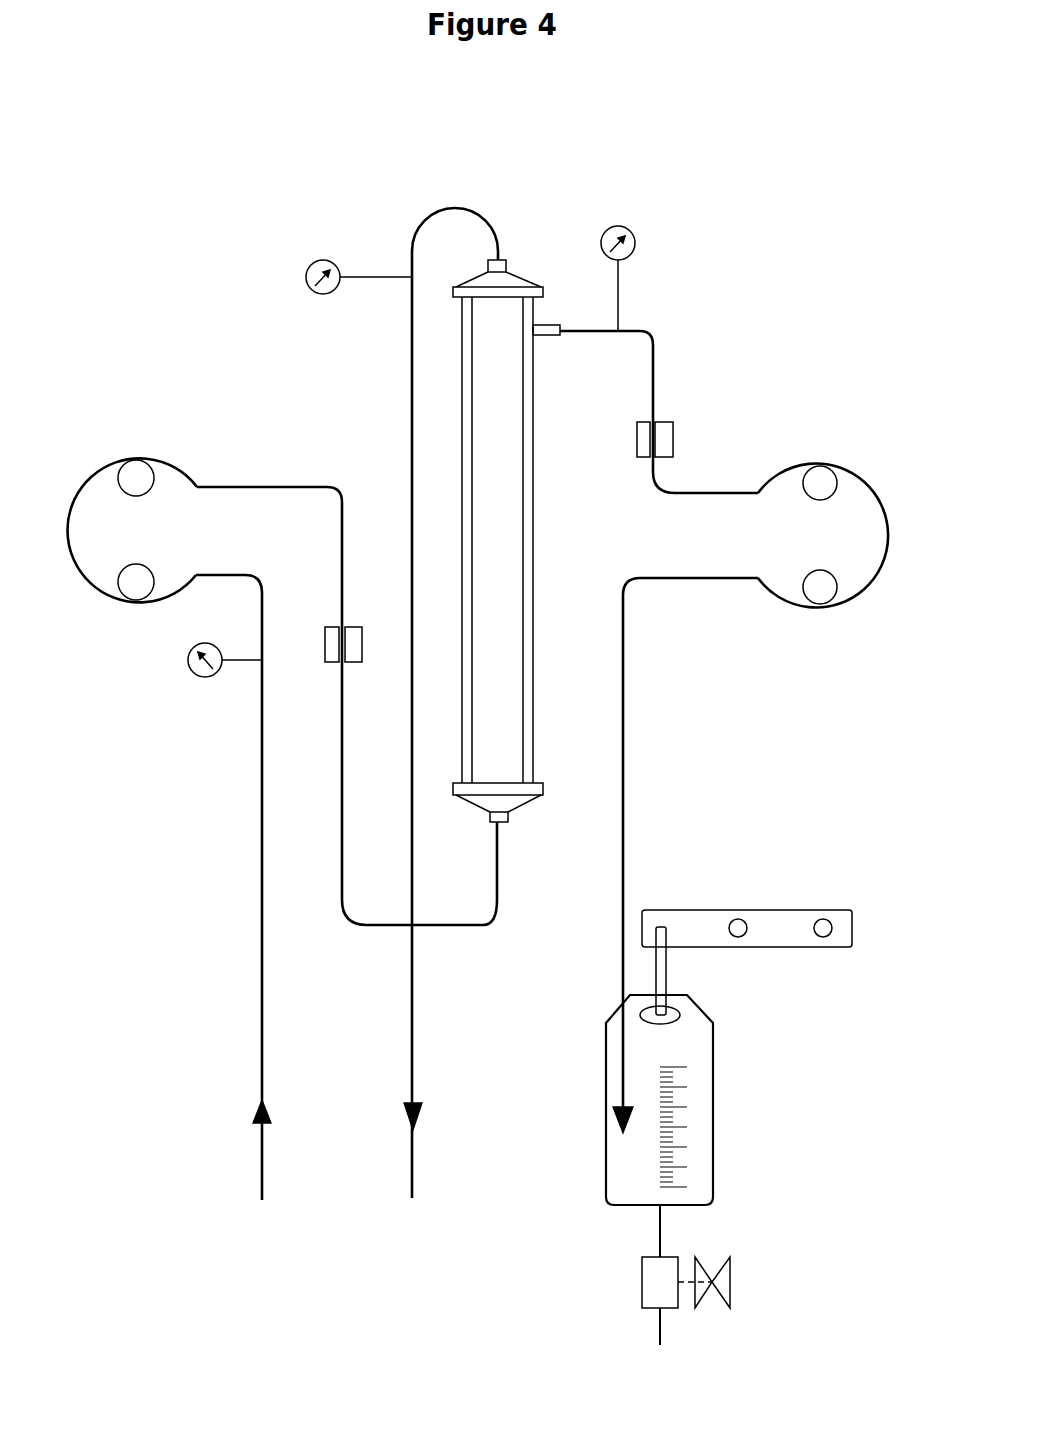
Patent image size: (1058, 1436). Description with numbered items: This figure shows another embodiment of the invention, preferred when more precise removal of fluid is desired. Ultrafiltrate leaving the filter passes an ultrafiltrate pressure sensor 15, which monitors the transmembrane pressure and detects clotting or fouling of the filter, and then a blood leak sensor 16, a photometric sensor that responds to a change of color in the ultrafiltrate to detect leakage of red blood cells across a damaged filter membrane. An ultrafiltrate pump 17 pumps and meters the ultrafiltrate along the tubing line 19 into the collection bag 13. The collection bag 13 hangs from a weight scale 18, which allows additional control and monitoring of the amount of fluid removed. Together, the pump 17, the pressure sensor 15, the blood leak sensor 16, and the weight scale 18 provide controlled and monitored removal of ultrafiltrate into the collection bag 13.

The collection bag 13 is at (715, 1098).
The ultrafiltrate pressure sensor 15 is at (635, 243).
The blood leak sensor 16 is at (672, 438).
The ultrafiltrate pump 17 is at (813, 527).
The weight scale 18 is at (712, 910).
The outlet tubing line 19 is at (623, 748).